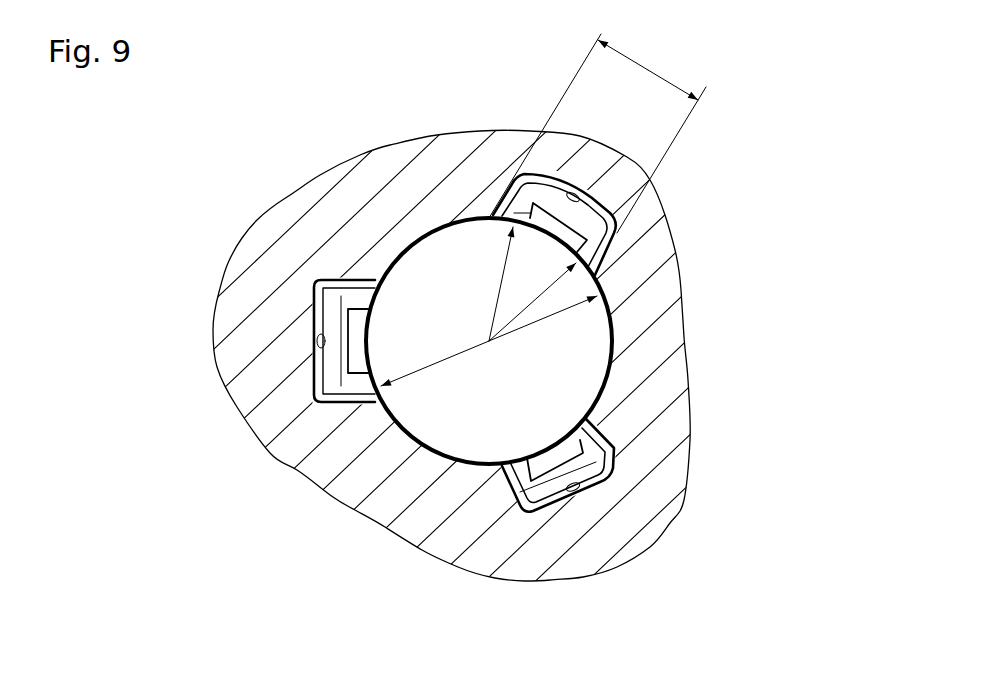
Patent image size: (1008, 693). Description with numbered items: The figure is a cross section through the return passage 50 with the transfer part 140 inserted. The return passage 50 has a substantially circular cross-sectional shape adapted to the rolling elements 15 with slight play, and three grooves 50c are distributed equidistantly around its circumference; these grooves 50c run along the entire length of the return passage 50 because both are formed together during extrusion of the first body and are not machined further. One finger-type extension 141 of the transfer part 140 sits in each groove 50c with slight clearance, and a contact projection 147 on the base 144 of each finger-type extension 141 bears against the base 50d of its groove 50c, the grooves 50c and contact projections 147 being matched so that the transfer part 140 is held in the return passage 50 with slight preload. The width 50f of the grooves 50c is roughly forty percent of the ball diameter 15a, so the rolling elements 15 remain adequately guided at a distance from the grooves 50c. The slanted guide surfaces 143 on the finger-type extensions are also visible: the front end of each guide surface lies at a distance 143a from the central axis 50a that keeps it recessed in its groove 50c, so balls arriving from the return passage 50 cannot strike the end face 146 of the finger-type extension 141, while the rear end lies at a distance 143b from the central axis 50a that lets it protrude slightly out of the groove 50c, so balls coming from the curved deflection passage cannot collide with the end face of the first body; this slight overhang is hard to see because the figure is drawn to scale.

The rolling elements 15 is at (420, 288).
The ball diameter 15a is at (489, 341).
The return passage 50 is at (606, 321).
The central axis 50a is at (440, 430).
The grooves 50c is at (665, 232).
The base of groove 50d is at (325, 439).
The width of grooves 50f is at (597, 133).
The transfer part 140 is at (527, 190).
The finger-type extension 141 is at (510, 487).
The guide surfaces 143 is at (592, 423).
The distance of front end of guide surface from central axis 143a is at (479, 284).
The distance of rear end of guide surface from central axis 143b is at (598, 292).
The base of finger-type extension 144 is at (327, 300).
The end face of finger-type extension 146 is at (540, 482).
The contact projection 147 is at (320, 345).